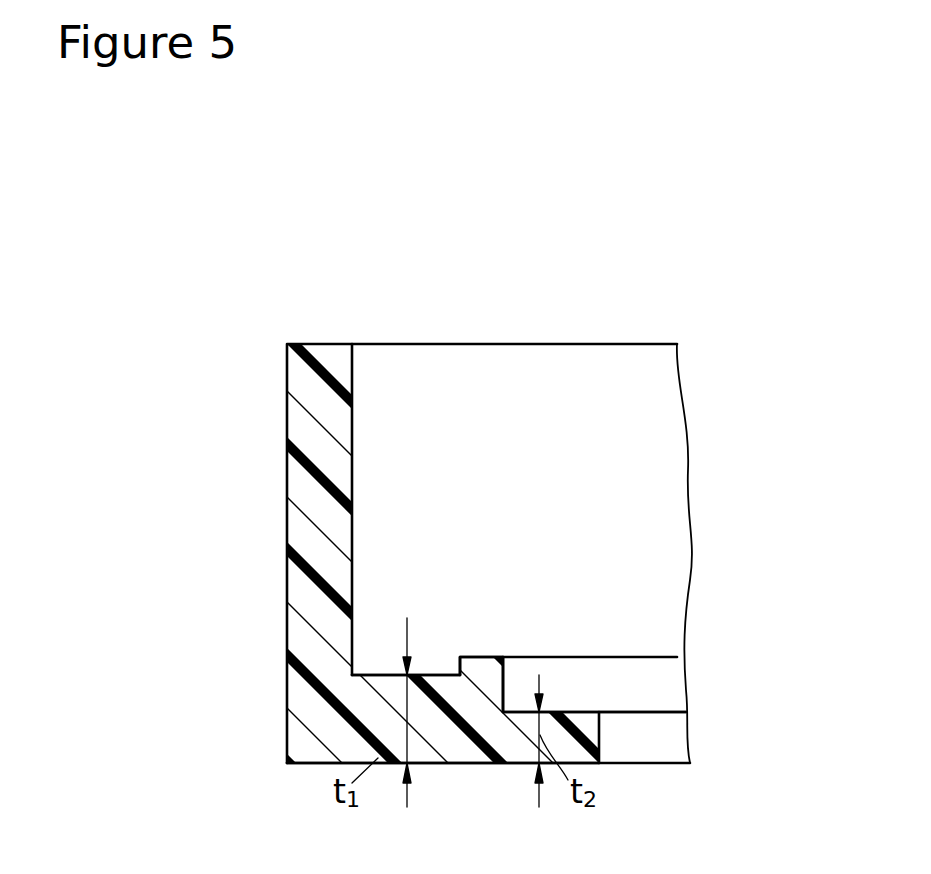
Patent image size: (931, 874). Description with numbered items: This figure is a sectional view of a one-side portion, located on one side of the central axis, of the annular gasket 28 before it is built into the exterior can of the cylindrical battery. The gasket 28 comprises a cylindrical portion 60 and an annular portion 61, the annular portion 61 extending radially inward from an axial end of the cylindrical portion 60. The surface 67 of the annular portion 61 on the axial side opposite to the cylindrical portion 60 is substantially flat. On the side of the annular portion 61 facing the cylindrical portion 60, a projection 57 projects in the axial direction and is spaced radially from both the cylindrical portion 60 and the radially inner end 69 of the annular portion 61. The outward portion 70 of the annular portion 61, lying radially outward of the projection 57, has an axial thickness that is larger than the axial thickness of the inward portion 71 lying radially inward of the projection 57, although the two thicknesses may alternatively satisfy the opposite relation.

The gasket 28 is at (523, 323).
The cylindrical portion 60 is at (290, 501).
The annular portion 61 is at (470, 717).
The outward portion 70 is at (368, 690).
The projection 57 is at (477, 655).
The inward portion 71 is at (519, 712).
The radially inner end 69 is at (607, 728).
The surface 67 is at (393, 765).